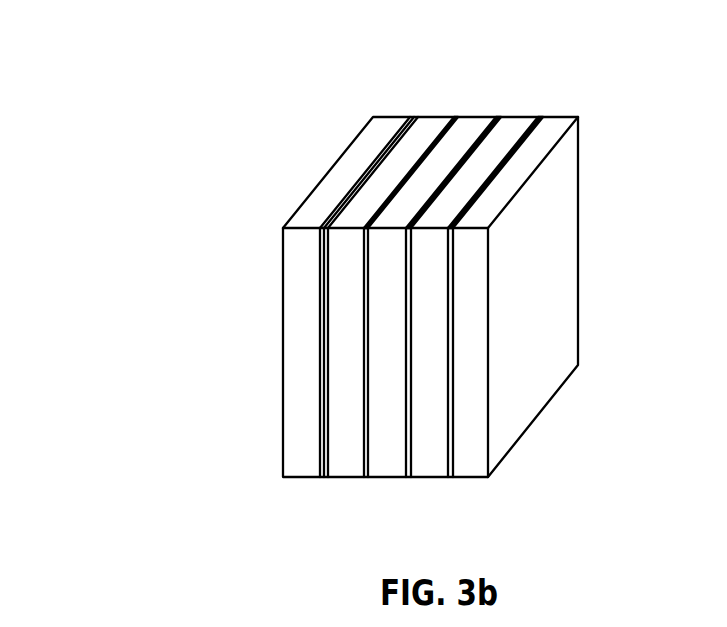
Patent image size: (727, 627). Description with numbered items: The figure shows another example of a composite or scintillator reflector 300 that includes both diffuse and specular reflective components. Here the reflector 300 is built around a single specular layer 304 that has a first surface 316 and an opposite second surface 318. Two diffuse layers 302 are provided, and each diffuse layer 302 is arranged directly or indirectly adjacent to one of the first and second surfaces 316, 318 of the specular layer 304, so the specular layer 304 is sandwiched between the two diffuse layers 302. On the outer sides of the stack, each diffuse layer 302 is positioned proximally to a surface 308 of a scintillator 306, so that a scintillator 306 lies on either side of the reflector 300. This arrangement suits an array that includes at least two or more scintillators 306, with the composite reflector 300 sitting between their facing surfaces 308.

The composite reflector 300 is at (147, 305).
The diffuse layer 302 is at (365, 200).
The specular layer 304 is at (462, 140).
The scintillator 306 is at (283, 320).
The scintillator surface 308 is at (323, 360).
The first surface 316 is at (365, 395).
The second surface 318 is at (408, 393).